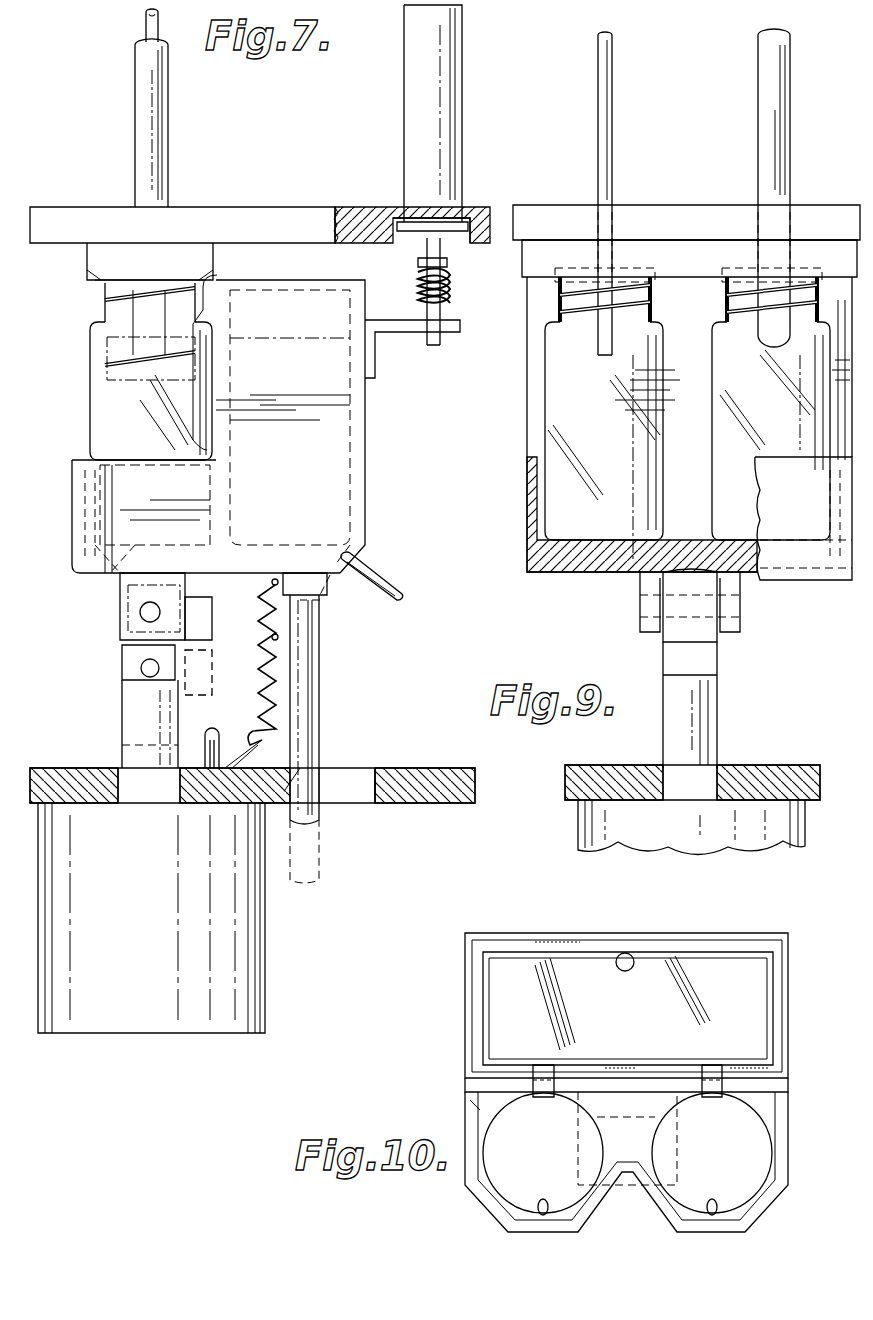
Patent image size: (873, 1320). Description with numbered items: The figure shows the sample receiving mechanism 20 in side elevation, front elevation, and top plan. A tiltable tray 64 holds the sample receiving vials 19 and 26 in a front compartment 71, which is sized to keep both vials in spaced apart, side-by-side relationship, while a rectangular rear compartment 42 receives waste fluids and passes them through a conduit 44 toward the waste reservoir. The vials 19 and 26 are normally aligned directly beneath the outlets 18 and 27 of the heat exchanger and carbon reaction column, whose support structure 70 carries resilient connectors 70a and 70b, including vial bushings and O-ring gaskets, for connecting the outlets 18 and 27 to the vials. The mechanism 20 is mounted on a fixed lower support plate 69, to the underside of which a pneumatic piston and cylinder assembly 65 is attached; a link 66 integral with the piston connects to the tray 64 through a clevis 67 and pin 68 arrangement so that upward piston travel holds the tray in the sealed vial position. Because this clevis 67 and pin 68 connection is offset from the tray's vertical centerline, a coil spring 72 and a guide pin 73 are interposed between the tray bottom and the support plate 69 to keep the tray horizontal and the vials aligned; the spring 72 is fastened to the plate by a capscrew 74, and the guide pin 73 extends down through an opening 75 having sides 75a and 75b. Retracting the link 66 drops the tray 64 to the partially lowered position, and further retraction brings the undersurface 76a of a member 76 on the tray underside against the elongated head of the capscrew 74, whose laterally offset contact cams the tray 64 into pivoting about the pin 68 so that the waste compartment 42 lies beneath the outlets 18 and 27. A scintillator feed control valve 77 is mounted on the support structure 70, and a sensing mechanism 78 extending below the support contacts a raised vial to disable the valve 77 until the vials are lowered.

In FIG. 7, the heat exchanger outlet 18 is at (146, 32).
In FIG. 9, the heat exchanger outlet 18 is at (612, 128).
In FIG. 9, the sample receiving vial 19 is at (545, 408).
In FIG. 10, the sample receiving vial 19 is at (508, 1226).
In FIG. 7, the sample receiving mechanism 20 is at (358, 642).
In FIG. 7, the carbon sample vial 26 is at (90, 418).
In FIG. 9, the carbon sample vial 26 is at (712, 475).
In FIG. 10, the carbon sample vial 26 is at (680, 1222).
In FIG. 7, the carbon reaction column outlet 27 is at (168, 160).
In FIG. 9, the carbon reaction column outlet 27 is at (790, 118).
In FIG. 7, the rear compartment 42 is at (365, 464).
In FIG. 10, the rear compartment 42 is at (745, 1000).
In FIG. 7, the conduit 44 is at (383, 582).
In FIG. 10, the conduit 44 is at (628, 954).
In FIG. 7, the tiltable tray 64 is at (78, 530).
In FIG. 9, the tiltable tray 64 is at (580, 572).
In FIG. 10, the tiltable tray 64 is at (468, 1100).
In FIG. 7, the pneumatic piston and cylinder assembly 65 is at (155, 1033).
In FIG. 9, the pneumatic piston and cylinder assembly 65 is at (585, 850).
In FIG. 7, the link 66 is at (127, 747).
In FIG. 9, the link 66 is at (712, 716).
In FIG. 7, the clevis 67 is at (130, 622).
In FIG. 9, the clevis 67 is at (735, 632).
In FIG. 7, the pin 68 is at (140, 612).
In FIG. 9, the pin 68 is at (735, 607).
In FIG. 7, the lower support plate 69 is at (414, 768).
In FIG. 9, the lower support plate 69 is at (755, 777).
In FIG. 7, the support structure 70 is at (356, 198).
In FIG. 9, the support structure 70 is at (714, 205).
In FIG. 9, the resilient connector 70a is at (545, 312).
In FIG. 7, the resilient connector 70b is at (105, 295).
In FIG. 9, the resilient connector 70b is at (738, 306).
In FIG. 10, the front compartment 71 is at (766, 1110).
In FIG. 7, the coil spring 72 is at (273, 690).
In FIG. 7, the guide pin 73 is at (315, 710).
In FIG. 7, the capscrew 74 is at (205, 722).
In FIG. 7, the opening 75 is at (337, 790).
In FIG. 7, the opening side 75a is at (292, 783).
In FIG. 7, the opening side 75b is at (373, 787).
In FIG. 7, the member 76 is at (212, 614).
In FIG. 7, the undersurface 76a is at (200, 642).
In FIG. 7, the scintillator feed control valve 77 is at (455, 78).
In FIG. 7, the sensing mechanism 78 is at (452, 290).